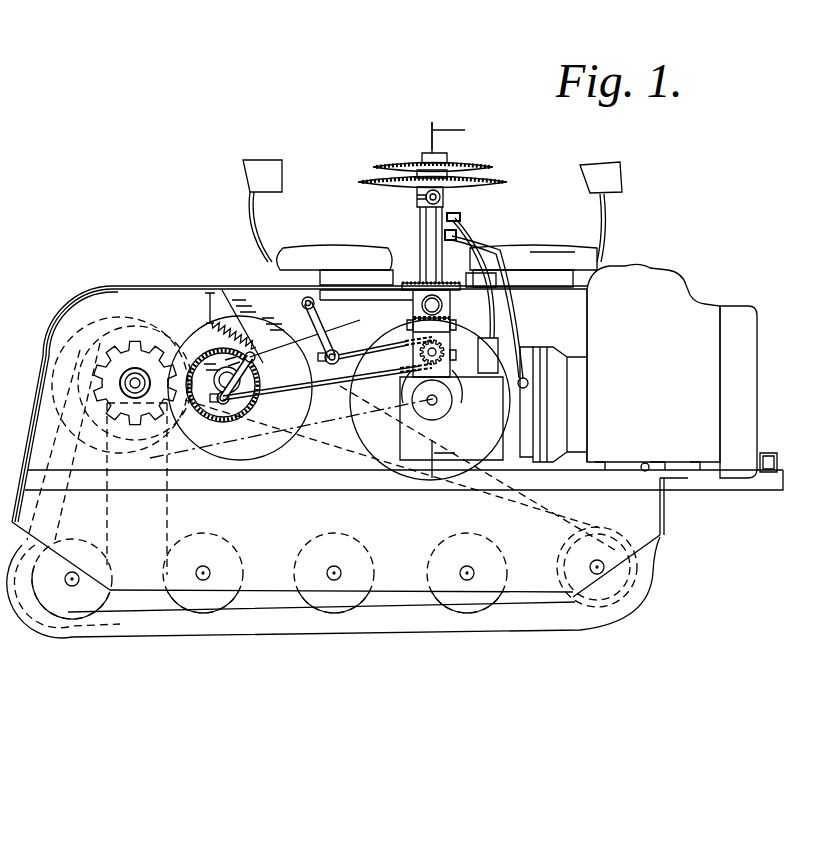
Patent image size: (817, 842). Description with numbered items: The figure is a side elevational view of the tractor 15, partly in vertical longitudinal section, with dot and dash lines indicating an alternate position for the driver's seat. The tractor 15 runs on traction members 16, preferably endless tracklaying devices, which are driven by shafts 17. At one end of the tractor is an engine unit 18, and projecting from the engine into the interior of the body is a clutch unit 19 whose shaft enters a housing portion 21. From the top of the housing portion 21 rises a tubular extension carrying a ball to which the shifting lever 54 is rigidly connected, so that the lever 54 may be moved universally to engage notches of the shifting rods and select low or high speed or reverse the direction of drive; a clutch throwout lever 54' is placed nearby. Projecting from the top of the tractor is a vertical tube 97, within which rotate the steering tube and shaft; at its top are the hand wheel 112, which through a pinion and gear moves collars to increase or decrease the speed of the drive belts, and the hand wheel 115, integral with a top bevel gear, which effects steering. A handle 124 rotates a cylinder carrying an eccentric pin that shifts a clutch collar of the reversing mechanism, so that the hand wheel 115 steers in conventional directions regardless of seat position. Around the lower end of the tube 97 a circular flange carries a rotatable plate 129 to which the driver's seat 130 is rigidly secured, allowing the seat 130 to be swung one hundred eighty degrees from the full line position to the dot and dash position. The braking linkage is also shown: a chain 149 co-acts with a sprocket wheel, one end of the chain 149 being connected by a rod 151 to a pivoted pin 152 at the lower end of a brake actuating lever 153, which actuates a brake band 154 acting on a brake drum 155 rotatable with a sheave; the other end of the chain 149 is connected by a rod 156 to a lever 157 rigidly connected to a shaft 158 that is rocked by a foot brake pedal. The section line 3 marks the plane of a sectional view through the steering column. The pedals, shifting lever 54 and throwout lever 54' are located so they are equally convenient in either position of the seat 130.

The section line 3- 3 is at (441, 299).
The tractor 15 is at (664, 520).
The traction members 16 is at (400, 638).
The shafts 17 is at (135, 398).
The engine unit 18 is at (645, 386).
The clutch unit 19 is at (548, 348).
The housing portion 21 is at (451, 415).
The shifting lever 54 is at (473, 292).
The clutch throwout lever 54' is at (500, 309).
The vertical tube 97 is at (420, 234).
The hand wheel 112 is at (478, 163).
The hand wheel 115 is at (498, 182).
The handle 124 is at (417, 197).
The plate 129 is at (536, 285).
The driver's seat 130 is at (540, 255).
The chain 149 is at (405, 344).
The rod 151 is at (345, 380).
The pivoted pin 152 is at (223, 405).
The brake actuating lever 153 is at (252, 378).
The brake band 154 is at (205, 292).
The brake drum 155 is at (196, 406).
The rod 156 is at (340, 350).
The lever 157 is at (322, 330).
The shaft 158 is at (304, 306).